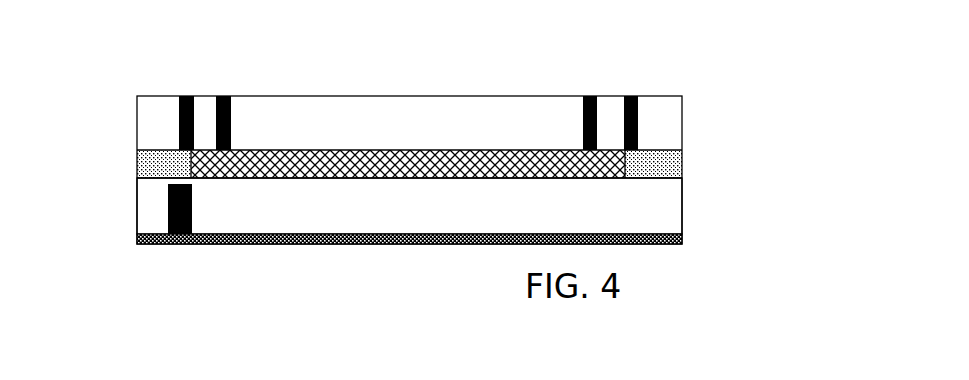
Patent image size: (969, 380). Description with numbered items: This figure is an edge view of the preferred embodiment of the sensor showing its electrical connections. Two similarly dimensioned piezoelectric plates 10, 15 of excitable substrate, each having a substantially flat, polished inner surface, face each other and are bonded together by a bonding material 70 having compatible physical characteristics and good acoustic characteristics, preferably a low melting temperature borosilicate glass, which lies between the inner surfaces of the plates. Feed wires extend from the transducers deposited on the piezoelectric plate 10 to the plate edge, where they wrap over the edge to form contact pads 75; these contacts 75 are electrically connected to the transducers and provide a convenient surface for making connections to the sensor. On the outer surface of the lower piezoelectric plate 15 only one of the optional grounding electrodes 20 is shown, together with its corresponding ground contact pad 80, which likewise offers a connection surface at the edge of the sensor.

The piezoelectric plate 10 is at (137, 110).
The piezoelectric plate 15 is at (137, 203).
The grounding electrode 20 is at (433, 245).
The bonding material 70 is at (683, 167).
The contact pads 75 is at (221, 96).
The ground contact pad 80 is at (163, 244).